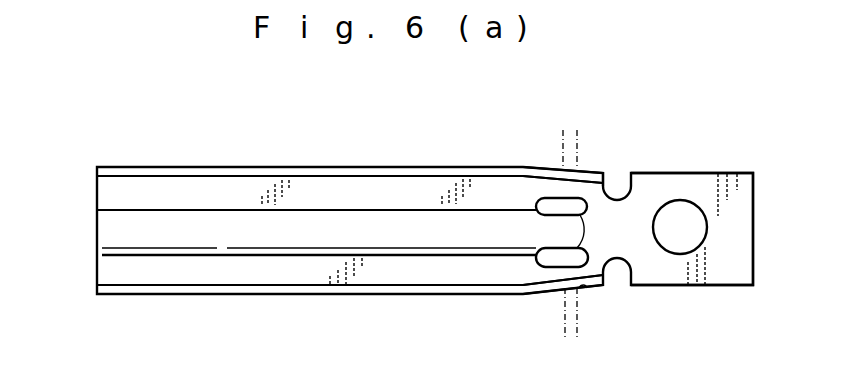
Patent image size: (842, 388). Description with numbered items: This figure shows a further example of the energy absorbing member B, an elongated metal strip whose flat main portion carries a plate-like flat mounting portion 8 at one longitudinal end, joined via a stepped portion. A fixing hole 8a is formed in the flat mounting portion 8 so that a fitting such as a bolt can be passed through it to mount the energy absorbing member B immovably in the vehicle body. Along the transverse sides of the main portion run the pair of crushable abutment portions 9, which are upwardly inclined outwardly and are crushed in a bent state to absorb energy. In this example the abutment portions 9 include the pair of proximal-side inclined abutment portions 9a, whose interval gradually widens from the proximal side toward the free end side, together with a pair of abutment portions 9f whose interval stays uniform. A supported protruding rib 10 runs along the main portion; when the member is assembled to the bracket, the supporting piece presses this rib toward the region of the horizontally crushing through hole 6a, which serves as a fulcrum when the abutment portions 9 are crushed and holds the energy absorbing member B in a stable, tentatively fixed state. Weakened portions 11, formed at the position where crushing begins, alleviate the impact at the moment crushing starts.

The crushable abutment portions 9 is at (394, 167).
The abutment portions with a uniform interval 9f is at (309, 167).
The proximal-side inclined abutment portions 9a is at (589, 169).
The energy absorbing member B is at (396, 296).
The horizontally crushing through hole 6a is at (583, 289).
The flat mounting portion 8 is at (703, 173).
The fixing hole 8a is at (708, 226).
The supported protruding rib 10 is at (120, 235).
The weakened portions 11 is at (552, 262).